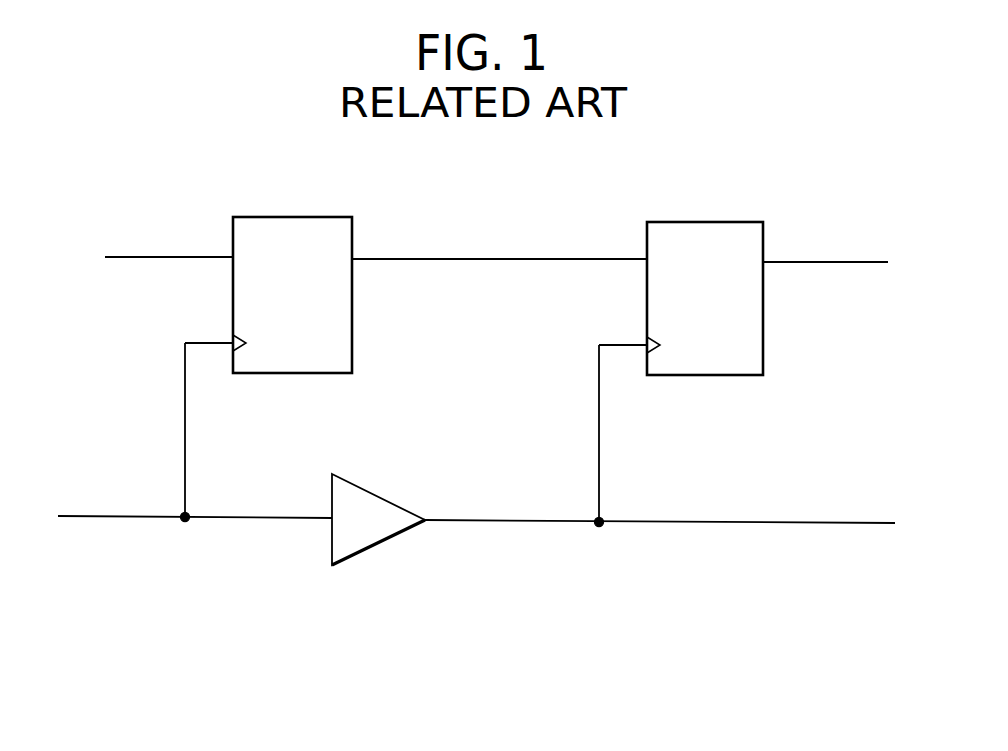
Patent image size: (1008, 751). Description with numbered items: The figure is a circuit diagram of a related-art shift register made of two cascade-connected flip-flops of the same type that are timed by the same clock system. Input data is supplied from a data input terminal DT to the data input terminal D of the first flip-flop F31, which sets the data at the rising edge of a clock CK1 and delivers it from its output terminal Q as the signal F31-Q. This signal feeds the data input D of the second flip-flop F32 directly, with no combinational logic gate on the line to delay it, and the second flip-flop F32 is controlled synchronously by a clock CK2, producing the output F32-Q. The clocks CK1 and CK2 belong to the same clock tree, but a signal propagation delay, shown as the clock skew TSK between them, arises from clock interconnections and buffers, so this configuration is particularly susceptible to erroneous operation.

The first flip-flop F31 is at (292, 295).
The second flip-flop F32 is at (705, 298).
The clock skew TSK is at (378, 519).
The data input terminal DT is at (146, 254).
The output of first flip-flop F31-Q is at (471, 259).
The output of second flip-flop F32-Q is at (861, 262).
The clock CK1 is at (133, 517).
The clock CK2 is at (536, 521).